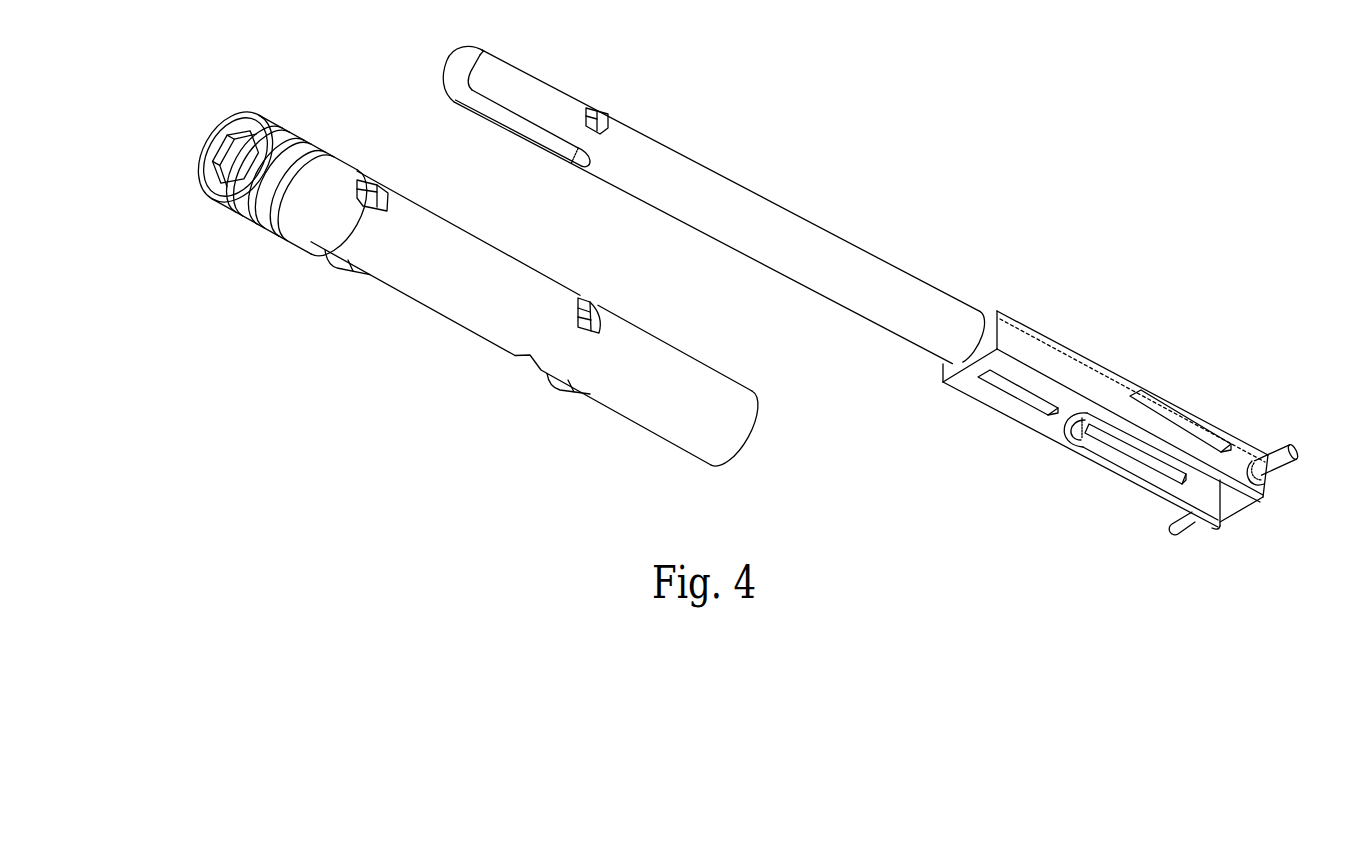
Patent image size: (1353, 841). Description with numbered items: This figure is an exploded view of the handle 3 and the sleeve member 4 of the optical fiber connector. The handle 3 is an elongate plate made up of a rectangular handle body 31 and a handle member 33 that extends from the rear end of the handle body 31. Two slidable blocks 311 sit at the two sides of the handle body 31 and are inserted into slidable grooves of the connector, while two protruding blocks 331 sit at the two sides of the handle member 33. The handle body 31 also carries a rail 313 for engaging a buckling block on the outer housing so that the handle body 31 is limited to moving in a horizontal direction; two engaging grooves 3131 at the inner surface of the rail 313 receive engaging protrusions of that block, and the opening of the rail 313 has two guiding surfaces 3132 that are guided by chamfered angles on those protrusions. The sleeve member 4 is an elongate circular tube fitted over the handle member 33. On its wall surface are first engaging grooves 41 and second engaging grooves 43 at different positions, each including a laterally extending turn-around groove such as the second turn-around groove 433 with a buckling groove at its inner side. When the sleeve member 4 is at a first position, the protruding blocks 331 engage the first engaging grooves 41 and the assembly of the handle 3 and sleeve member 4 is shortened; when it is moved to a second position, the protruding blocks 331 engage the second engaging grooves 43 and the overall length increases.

The handle 3 is at (918, 262).
The handle body 31 is at (1077, 346).
The slidable block 311 is at (1296, 452).
The rail 313 is at (1201, 487).
The engaging groove 3131 is at (1113, 441).
The guiding surface 3132 is at (1153, 482).
The handle member 33 is at (748, 197).
The protruding block 331 is at (605, 116).
The sleeve member 4 is at (452, 343).
The first engaging groove 41 is at (378, 190).
The second engaging groove 43 is at (597, 323).
The second turn-around groove 433 is at (580, 300).